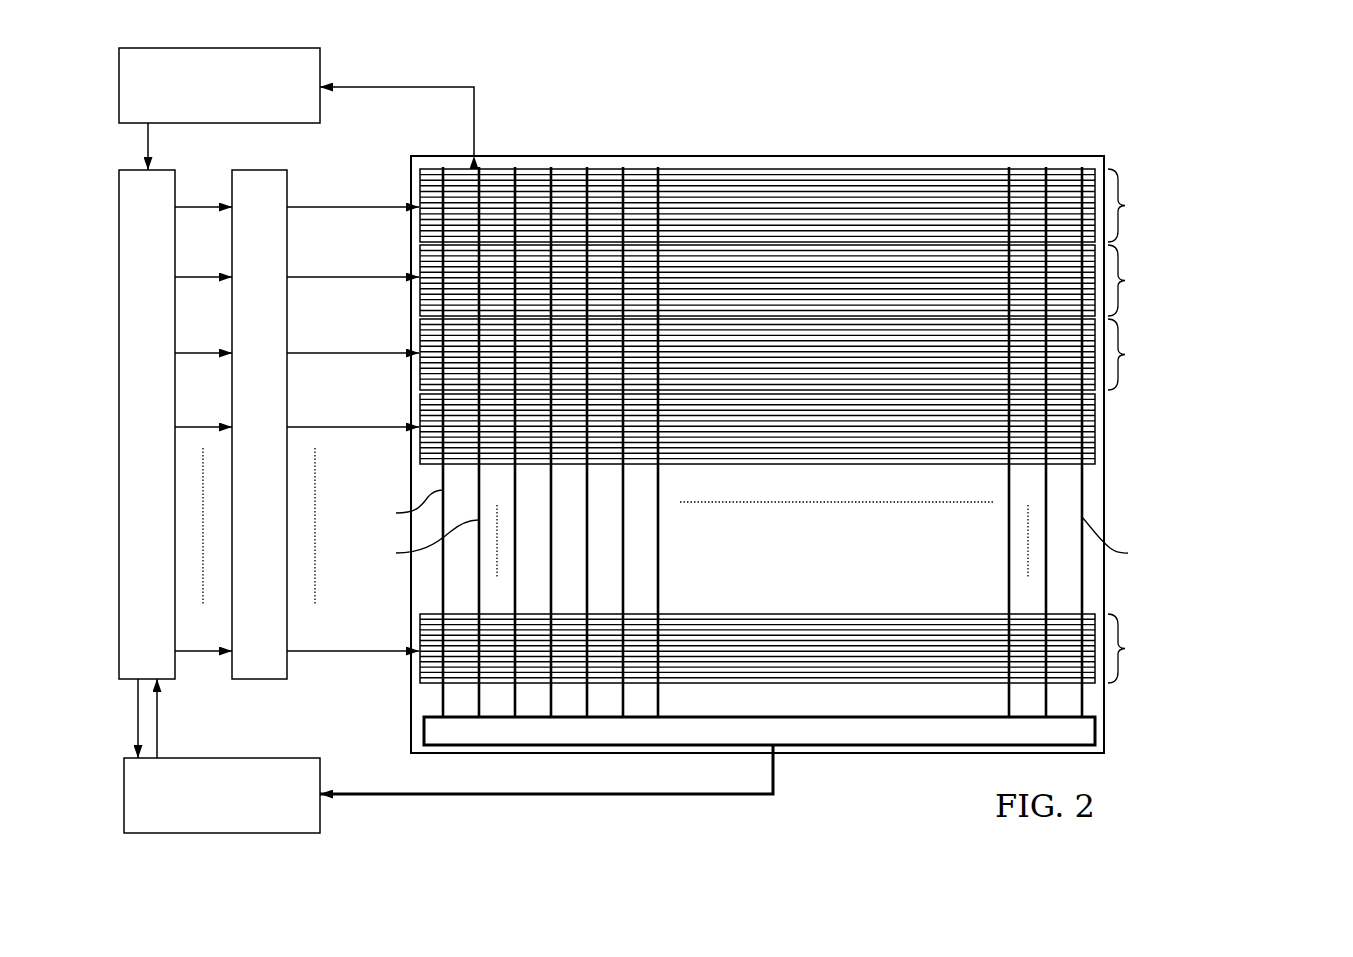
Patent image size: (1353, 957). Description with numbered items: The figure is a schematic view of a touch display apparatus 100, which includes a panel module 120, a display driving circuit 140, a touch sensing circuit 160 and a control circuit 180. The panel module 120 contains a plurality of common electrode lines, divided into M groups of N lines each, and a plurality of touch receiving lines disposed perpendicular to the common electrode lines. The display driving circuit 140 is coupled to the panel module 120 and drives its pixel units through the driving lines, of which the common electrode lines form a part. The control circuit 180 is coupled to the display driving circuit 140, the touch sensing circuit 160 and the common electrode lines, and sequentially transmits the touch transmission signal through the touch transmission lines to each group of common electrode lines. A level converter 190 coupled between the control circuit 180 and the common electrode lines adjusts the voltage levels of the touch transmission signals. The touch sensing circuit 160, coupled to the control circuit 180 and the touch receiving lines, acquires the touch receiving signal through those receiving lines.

The touch display apparatus 100 is at (1132, 93).
The panel module 120 is at (835, 156).
The display driving circuit 140 is at (270, 48).
The touch sensing circuit 160 is at (245, 758).
The control circuit 180 is at (165, 170).
The level converter 190 is at (277, 170).